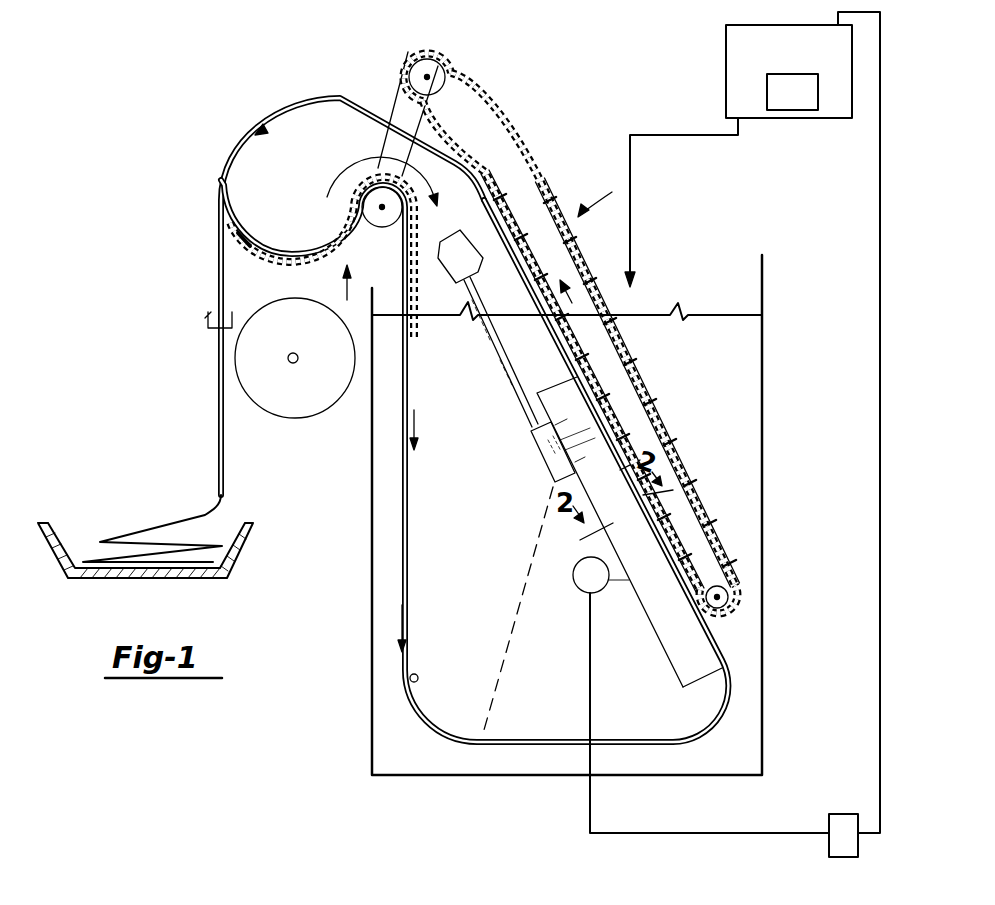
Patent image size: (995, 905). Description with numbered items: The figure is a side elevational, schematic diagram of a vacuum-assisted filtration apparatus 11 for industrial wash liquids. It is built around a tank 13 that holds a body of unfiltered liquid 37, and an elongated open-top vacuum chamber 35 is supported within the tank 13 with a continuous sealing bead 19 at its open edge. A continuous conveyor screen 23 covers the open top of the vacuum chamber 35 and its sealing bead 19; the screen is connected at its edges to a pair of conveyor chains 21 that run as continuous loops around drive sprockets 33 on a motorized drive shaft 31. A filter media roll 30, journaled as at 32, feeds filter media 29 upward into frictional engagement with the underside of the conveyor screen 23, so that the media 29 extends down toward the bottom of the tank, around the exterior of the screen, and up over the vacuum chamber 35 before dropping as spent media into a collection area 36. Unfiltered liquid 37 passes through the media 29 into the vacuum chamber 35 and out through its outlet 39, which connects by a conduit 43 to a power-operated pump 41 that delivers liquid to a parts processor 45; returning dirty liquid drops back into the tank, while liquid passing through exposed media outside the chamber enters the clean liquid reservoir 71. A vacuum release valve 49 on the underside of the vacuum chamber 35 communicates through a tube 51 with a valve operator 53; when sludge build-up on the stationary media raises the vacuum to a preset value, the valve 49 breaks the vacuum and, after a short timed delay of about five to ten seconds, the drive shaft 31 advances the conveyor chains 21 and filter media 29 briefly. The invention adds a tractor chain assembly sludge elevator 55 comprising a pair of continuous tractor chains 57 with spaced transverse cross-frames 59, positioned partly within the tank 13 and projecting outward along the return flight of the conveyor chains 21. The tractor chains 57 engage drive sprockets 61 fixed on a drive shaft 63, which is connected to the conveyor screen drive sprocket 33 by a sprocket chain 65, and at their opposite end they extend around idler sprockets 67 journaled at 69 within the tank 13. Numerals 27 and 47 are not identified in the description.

The vacuum-assisted filtration apparatus 11 is at (345, 475).
The tank 13 is at (762, 700).
The sealing bead 19 is at (677, 597).
The conveyor chains 21 is at (304, 250).
The conveyor screen 23 is at (410, 677).
The guide loop 27 is at (226, 200).
The filter media 29 is at (218, 245).
The filter media roll 30 is at (290, 420).
The motorized drive shaft 31 is at (382, 212).
The journal 32 is at (288, 360).
The drive sprockets 33 is at (384, 172).
The vacuum chamber 35 is at (672, 672).
The collection area 36 is at (208, 328).
The unfiltered liquid 37 is at (387, 425).
The outlet 39 is at (577, 590).
The power-operated pump 41 is at (843, 858).
The conduit 43 is at (880, 635).
The parts processor 45 is at (830, 120).
The signal line 47 is at (690, 133).
The vacuum release valve 49 is at (547, 464).
The tube 51 is at (511, 378).
The valve operator 53 is at (458, 245).
The tractor chain assembly sludge elevator 55 is at (595, 195).
The tractor chains 57 is at (535, 165).
The transverse cross-frames 59 is at (648, 450).
The drive sprockets 61 is at (446, 58).
The drive shaft 63 is at (424, 52).
The sprocket chain 65 is at (379, 148).
The idler sprockets 67 is at (745, 600).
The journal 69 is at (736, 590).
The clean liquid reservoir 71 is at (430, 560).